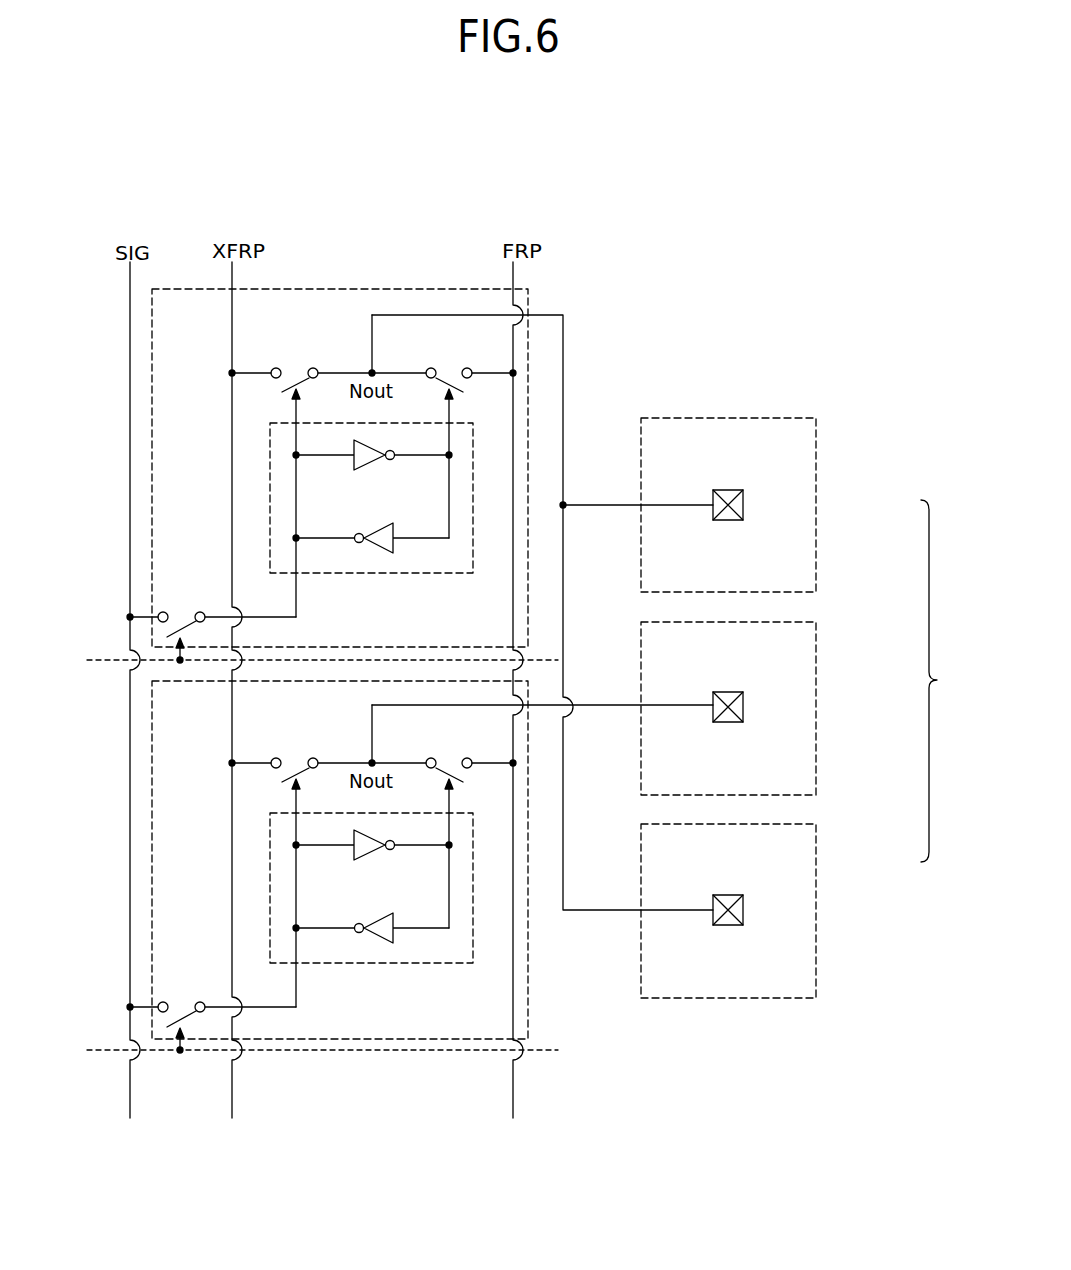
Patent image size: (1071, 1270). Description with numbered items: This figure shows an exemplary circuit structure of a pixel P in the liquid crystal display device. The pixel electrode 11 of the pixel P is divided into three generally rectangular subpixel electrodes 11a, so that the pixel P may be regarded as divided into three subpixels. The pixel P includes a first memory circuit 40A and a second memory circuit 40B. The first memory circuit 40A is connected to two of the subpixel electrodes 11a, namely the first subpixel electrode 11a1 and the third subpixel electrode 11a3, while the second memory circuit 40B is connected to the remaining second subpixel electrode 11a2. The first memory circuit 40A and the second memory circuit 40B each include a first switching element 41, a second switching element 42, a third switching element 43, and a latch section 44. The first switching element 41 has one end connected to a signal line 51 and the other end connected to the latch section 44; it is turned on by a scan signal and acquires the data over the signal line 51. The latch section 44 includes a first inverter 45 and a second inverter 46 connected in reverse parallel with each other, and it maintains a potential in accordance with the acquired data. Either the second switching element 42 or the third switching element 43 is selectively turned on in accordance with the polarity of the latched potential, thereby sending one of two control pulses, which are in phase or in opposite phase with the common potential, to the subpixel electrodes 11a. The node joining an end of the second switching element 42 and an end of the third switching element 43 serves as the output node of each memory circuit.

The pixel P is at (856, 227).
The pixel electrode 11 is at (942, 681).
The subpixel electrodes 11a is at (781, 708).
The first subpixel electrode 11a1 is at (793, 505).
The second subpixel electrode 11a2 is at (793, 707).
The third subpixel electrode 11a3 is at (793, 910).
The first memory circuit 40A is at (186, 289).
The second memory circuit 40B is at (152, 752).
The first switching element 41 is at (182, 611).
The second switching element 42 is at (295, 369).
The third switching element 43 is at (449, 369).
The latch section 44 is at (386, 575).
The first inverter 45 is at (379, 462).
The second inverter 46 is at (369, 530).
The signal line 51 is at (130, 476).